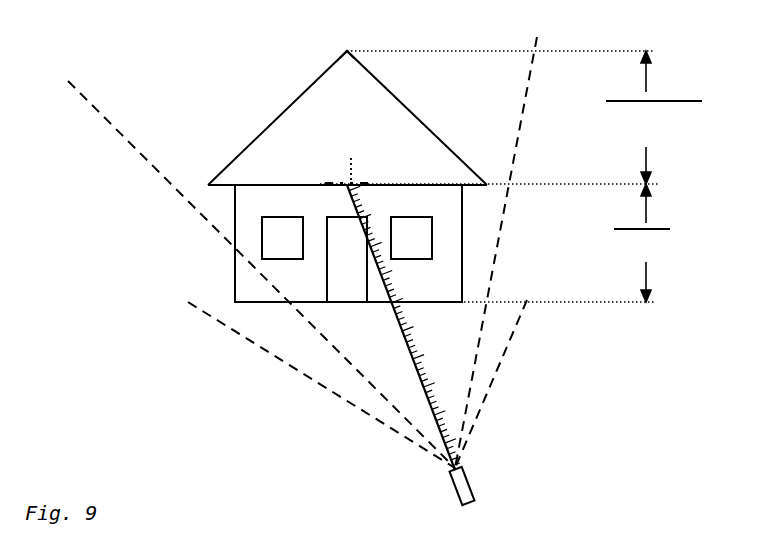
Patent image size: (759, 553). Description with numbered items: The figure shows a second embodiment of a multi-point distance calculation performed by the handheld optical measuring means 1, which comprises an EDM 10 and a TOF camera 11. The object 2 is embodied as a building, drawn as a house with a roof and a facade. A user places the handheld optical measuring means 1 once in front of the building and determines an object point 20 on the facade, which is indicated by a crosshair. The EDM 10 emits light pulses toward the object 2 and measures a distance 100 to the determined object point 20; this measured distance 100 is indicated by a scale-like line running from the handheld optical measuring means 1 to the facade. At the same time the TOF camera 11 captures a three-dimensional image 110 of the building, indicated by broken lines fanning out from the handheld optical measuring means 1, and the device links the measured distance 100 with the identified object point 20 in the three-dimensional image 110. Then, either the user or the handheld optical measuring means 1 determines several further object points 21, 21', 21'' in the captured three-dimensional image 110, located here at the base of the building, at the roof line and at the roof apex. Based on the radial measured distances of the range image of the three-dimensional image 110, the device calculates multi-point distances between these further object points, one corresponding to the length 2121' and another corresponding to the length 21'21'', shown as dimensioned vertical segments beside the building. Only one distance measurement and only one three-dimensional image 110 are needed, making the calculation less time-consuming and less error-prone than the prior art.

The handheld optical measuring means 1 is at (366, 487).
The EDM 10 is at (366, 487).
The TOF camera 11 is at (457, 490).
The measured distance 100 is at (458, 455).
The 3D image 110 is at (357, 412).
The object 2 is at (239, 251).
The object point 20 is at (337, 143).
The further object point 21 is at (348, 320).
The further object point 21' is at (337, 143).
The further object point 21'' is at (287, 39).
The length between further object points 21' and 21'' 21'21'' is at (654, 117).
The length between further object points 21 and 21' 2121' is at (646, 243).